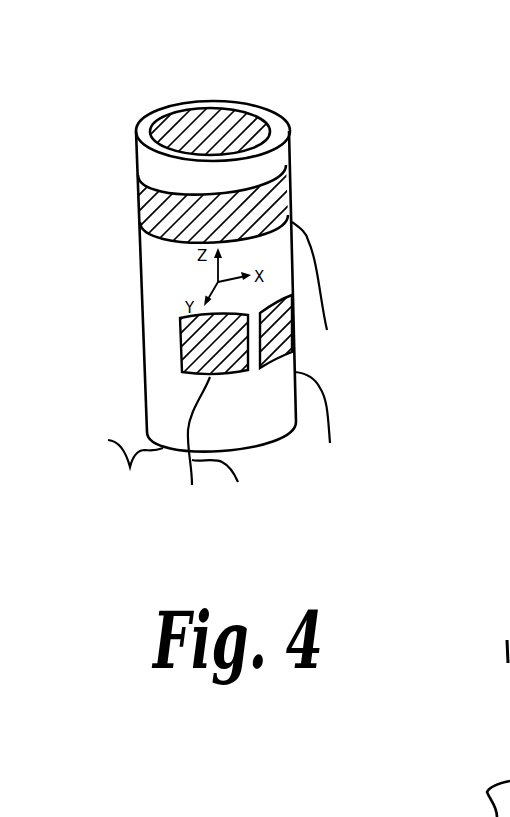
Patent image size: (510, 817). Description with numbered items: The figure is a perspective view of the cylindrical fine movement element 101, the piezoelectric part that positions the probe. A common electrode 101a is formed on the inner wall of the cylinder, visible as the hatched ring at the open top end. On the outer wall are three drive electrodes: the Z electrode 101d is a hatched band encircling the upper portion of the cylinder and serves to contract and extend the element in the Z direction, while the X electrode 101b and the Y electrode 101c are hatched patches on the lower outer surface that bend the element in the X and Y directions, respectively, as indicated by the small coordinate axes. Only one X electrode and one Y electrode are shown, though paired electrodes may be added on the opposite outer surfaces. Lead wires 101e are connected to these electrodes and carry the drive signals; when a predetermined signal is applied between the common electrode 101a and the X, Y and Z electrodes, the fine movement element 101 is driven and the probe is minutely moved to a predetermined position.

The fine movement element 101 is at (130, 272).
The common electrode 101a is at (192, 102).
The X electrode 101b is at (292, 330).
The Y electrode 101c is at (180, 351).
The Z electrode 101d is at (290, 193).
The lead wires 101e is at (308, 240).